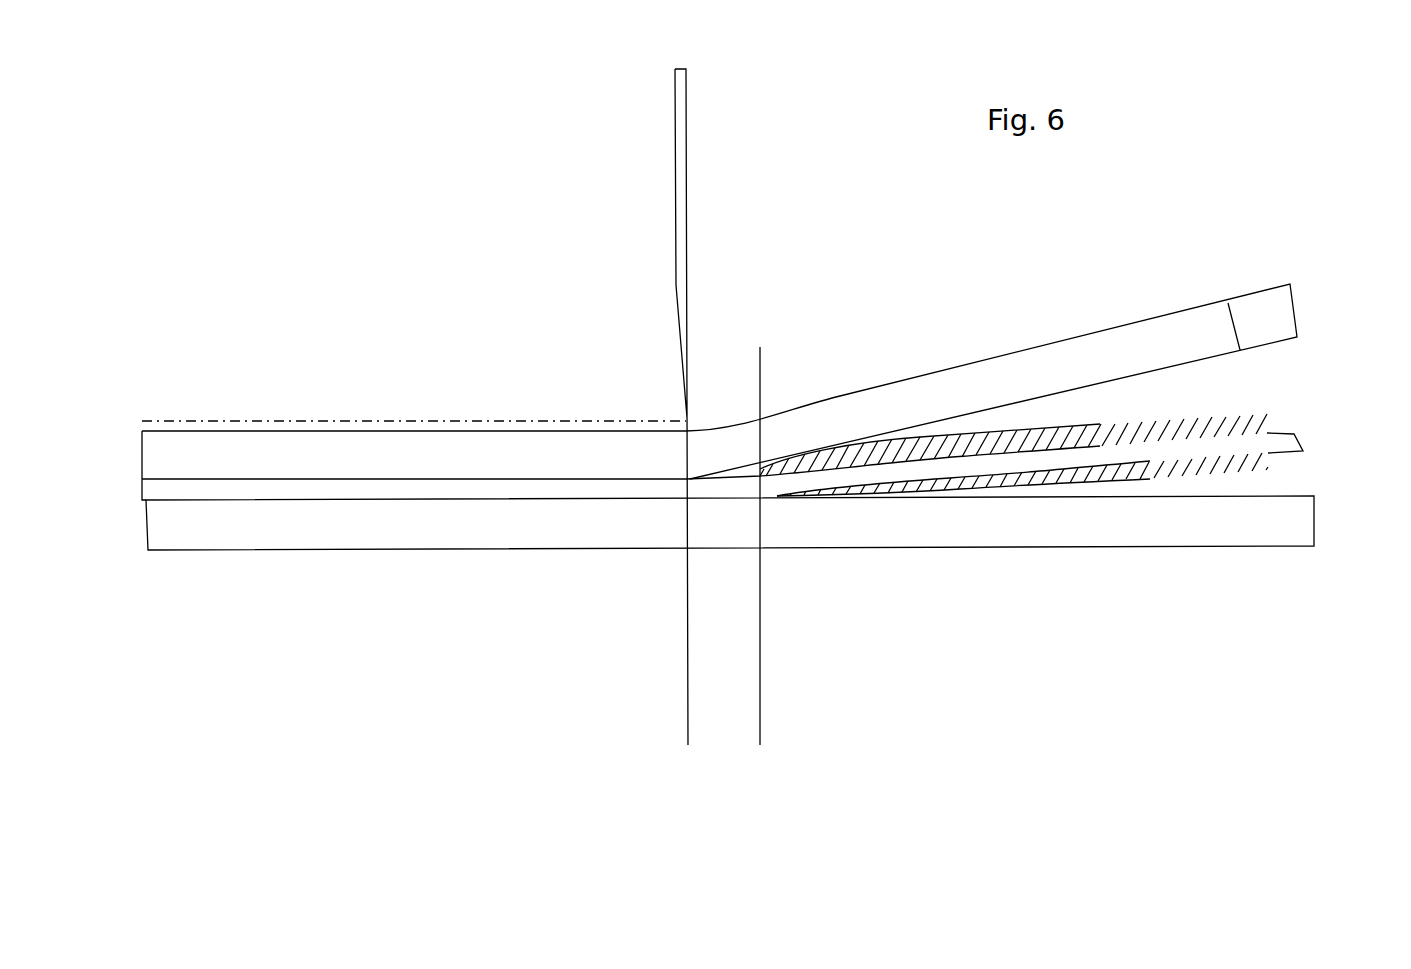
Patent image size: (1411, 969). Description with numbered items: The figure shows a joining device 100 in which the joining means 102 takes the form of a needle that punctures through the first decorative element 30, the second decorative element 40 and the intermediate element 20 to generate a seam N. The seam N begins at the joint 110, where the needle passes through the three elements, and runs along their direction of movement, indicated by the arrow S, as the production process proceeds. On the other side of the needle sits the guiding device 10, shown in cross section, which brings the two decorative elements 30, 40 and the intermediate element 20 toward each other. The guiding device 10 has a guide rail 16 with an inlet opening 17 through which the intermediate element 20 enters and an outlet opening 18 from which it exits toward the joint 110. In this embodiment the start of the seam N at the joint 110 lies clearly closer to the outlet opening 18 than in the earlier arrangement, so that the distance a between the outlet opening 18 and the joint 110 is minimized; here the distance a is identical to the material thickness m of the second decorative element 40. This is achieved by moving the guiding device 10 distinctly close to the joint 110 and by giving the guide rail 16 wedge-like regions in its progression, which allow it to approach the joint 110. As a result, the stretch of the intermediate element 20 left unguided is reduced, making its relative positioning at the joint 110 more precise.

The joining means 102 is at (684, 217).
The joint 110 is at (685, 417).
The seam N is at (300, 421).
The sheet feed direction S is at (312, 292).
The joining device 100 is at (466, 237).
The decorative element 30 is at (1098, 525).
The second decorative element 40 is at (990, 373).
The material thickness m is at (1276, 292).
The intermediate element 20 is at (1297, 433).
The inlet opening 17 is at (1268, 440).
The guide rail 16 is at (1270, 470).
The guiding device 10 is at (1320, 383).
The outlet opening 18 is at (778, 491).
The distance a is at (760, 668).